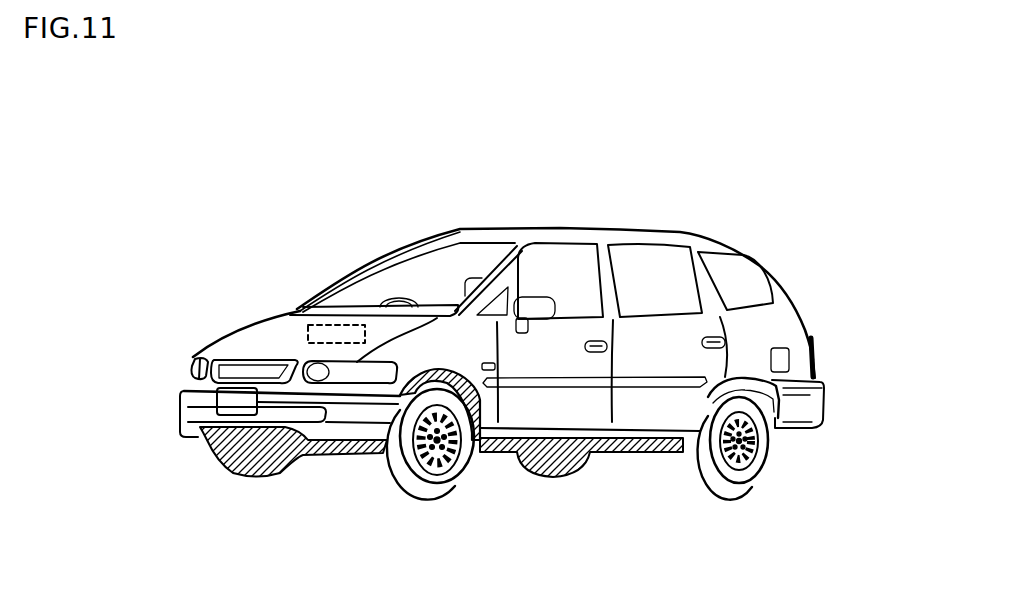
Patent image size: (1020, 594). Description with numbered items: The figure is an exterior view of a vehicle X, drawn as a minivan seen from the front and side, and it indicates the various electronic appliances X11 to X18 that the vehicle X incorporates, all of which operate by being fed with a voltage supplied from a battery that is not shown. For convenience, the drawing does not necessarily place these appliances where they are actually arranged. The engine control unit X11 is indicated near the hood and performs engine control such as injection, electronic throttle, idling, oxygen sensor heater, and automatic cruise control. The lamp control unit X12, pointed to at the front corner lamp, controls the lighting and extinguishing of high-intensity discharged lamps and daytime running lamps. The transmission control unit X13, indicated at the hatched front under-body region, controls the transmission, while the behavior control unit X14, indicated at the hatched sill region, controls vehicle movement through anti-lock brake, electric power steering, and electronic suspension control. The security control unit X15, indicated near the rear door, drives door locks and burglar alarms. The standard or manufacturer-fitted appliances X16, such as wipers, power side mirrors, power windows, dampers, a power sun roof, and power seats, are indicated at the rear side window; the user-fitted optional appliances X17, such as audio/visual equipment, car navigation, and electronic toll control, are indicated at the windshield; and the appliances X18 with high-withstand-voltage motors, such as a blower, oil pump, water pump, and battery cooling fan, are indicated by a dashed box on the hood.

The vehicle X is at (160, 183).
The engine control unit X11 is at (280, 337).
The lamp control unit X12 is at (195, 363).
The transmission control unit X13 is at (370, 453).
The behavior control unit X14 is at (677, 450).
The security control unit X15 is at (730, 342).
The standard or manufacturer-fitted electronic appliances X16 is at (662, 260).
The user-fitted optional electronic appliances X17 is at (432, 300).
The electronic appliances with high-withstand-voltage motors X18 is at (317, 324).